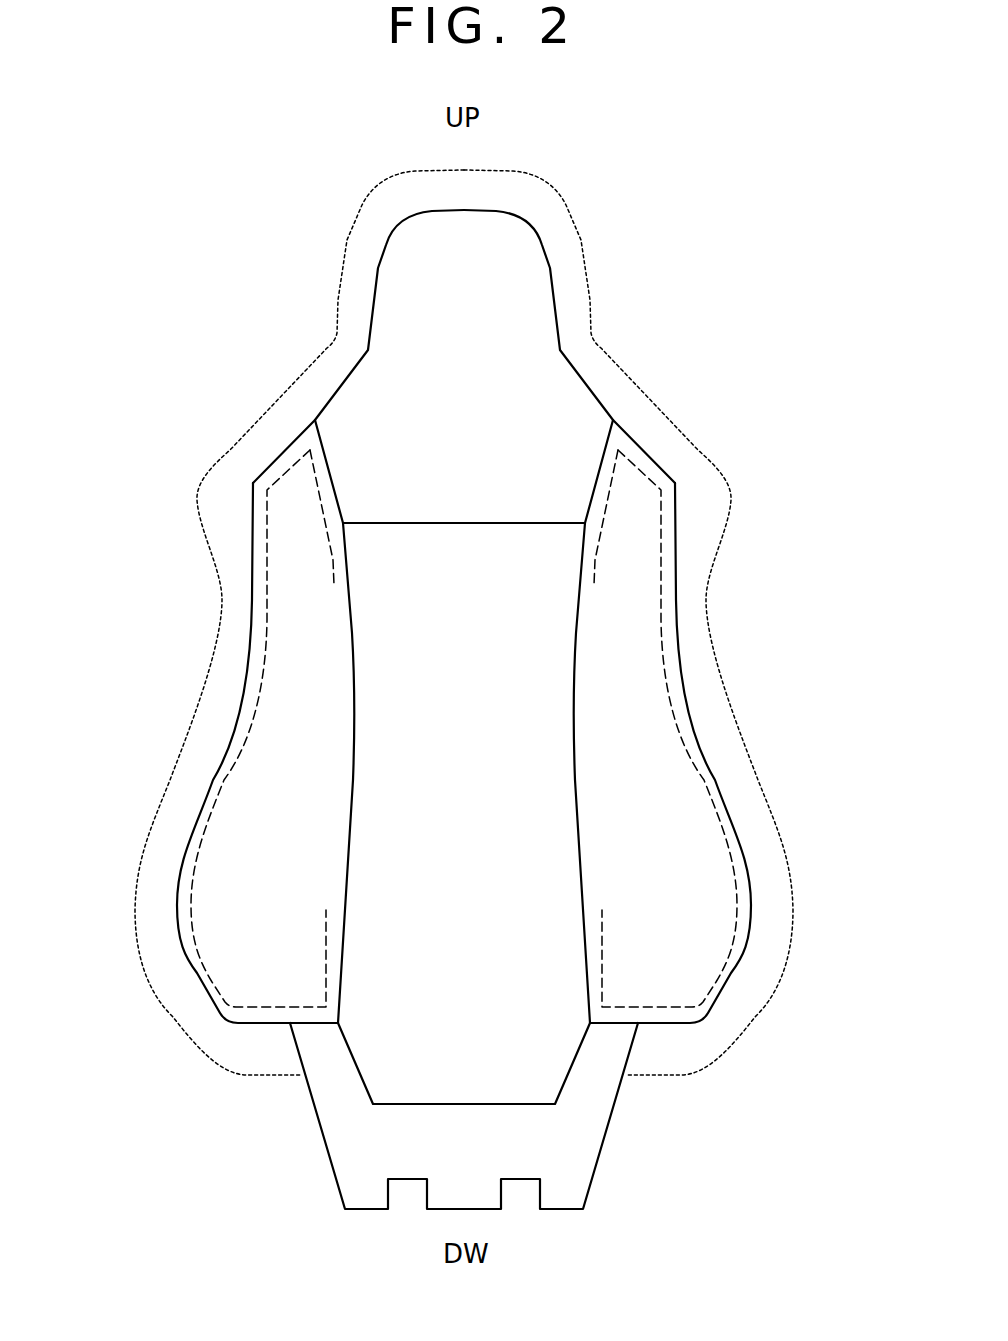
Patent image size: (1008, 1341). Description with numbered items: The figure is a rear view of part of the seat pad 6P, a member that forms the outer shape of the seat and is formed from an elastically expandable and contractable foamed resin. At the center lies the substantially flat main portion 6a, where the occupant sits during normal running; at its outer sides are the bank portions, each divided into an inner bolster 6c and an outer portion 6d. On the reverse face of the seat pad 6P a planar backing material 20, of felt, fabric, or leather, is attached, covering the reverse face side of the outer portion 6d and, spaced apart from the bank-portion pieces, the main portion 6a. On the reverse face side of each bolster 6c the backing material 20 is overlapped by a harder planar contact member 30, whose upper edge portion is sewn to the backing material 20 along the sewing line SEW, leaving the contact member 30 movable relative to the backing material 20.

The seat pad 6P is at (583, 388).
The backing material 20 is at (510, 558).
The contact member 30 is at (290, 710).
The sewing line SEW is at (333, 562).
The main portion 6a is at (464, 721).
The bolster 6c is at (464, 728).
The outer portion 6d is at (173, 830).